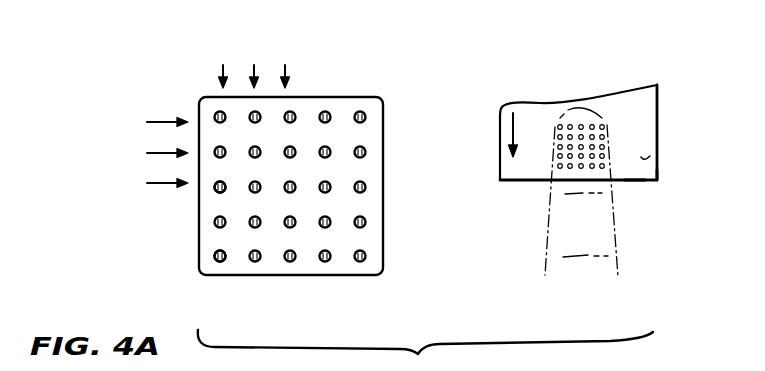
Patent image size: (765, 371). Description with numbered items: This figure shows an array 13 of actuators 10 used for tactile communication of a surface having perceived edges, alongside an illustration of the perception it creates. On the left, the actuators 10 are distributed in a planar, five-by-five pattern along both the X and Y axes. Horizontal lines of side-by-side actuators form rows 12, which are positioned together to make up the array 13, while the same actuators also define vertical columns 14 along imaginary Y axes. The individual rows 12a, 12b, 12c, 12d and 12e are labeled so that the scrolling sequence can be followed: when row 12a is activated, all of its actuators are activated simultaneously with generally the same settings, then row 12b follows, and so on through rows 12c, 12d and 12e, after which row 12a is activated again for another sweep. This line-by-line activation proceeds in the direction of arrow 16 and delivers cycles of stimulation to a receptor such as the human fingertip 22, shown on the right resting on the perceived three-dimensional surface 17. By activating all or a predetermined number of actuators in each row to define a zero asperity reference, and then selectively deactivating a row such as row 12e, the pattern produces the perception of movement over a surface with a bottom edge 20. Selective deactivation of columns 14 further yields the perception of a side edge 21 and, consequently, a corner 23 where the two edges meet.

The actuators 10 is at (216, 192).
The rows 12 is at (141, 110).
The row 12a is at (366, 116).
The row 12b is at (366, 151).
The row 12c is at (366, 188).
The row 12d is at (366, 223).
The row 12e is at (366, 257).
The array 13 is at (221, 277).
The columns 14 is at (300, 65).
The arrow 16 is at (518, 126).
The three-dimensional surface 17 is at (650, 156).
The lower edge 20 is at (637, 182).
The side edge 21 is at (658, 118).
The fingertip 22 is at (600, 119).
The corner 23 is at (660, 184).